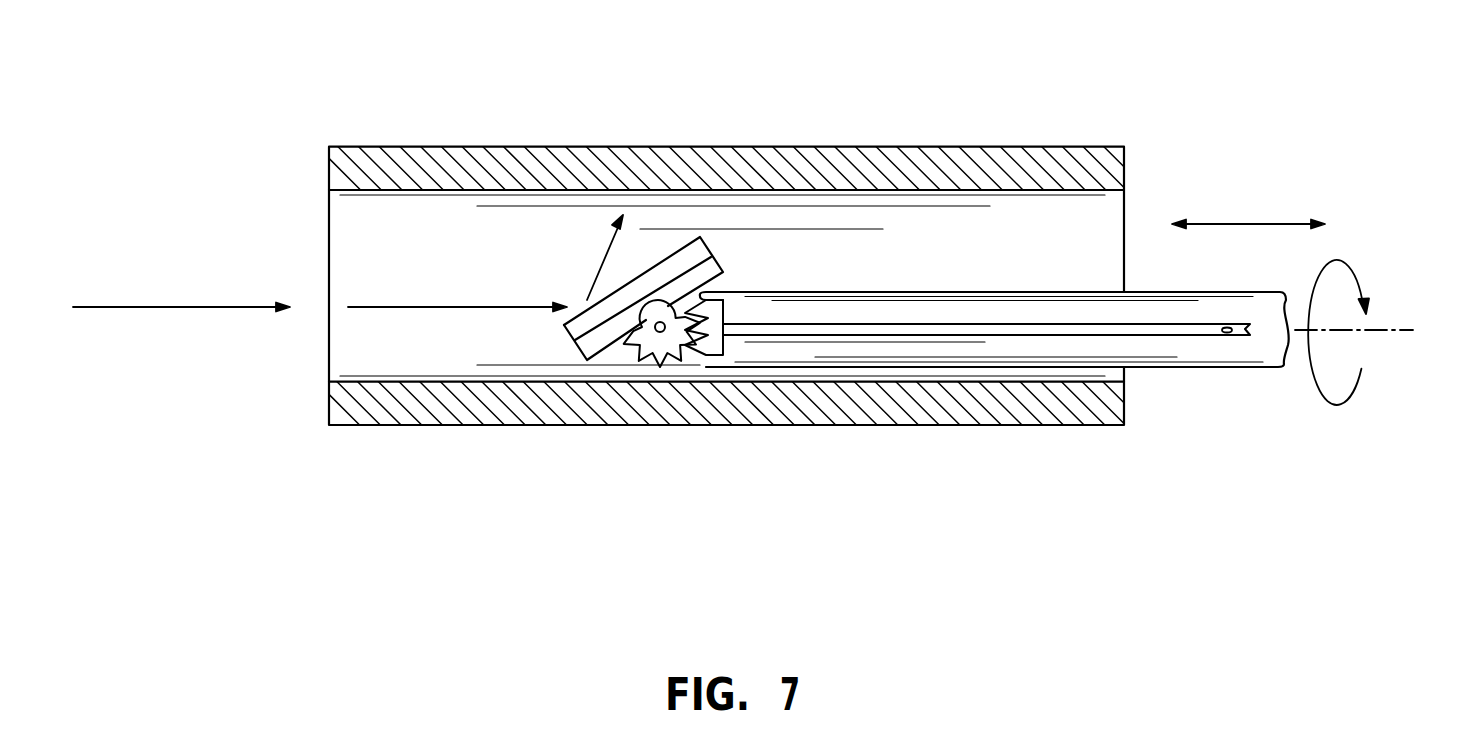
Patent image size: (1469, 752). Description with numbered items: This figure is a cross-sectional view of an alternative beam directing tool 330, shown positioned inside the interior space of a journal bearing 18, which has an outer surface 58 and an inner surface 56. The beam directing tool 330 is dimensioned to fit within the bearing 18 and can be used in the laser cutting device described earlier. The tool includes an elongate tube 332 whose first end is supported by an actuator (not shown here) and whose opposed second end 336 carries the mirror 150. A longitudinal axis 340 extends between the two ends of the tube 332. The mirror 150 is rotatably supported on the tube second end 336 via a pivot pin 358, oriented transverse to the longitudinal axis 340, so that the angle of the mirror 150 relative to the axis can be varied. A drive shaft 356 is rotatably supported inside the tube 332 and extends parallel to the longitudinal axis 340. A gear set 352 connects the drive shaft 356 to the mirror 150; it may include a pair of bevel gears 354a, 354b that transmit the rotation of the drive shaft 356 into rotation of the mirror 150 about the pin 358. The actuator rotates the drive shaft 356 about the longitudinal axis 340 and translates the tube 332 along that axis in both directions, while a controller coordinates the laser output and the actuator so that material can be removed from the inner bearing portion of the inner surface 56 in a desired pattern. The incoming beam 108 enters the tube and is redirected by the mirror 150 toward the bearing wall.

The journal bearing 18 is at (793, 160).
The outer surface 58 is at (1098, 146).
The inner surface 56 is at (1076, 193).
The beam directing tool 330 is at (417, 238).
The inlet flow 108 is at (164, 305).
The mirror 150 is at (578, 333).
The pivot pin 358 is at (642, 330).
The bevel gear 354a is at (645, 362).
The bevel gear 354b is at (711, 352).
The gear set 352 is at (735, 512).
The second end 336 is at (755, 292).
The drive shaft 356 is at (957, 332).
The elongate tube 332 is at (1040, 292).
The longitudinal axis 340 is at (1395, 327).